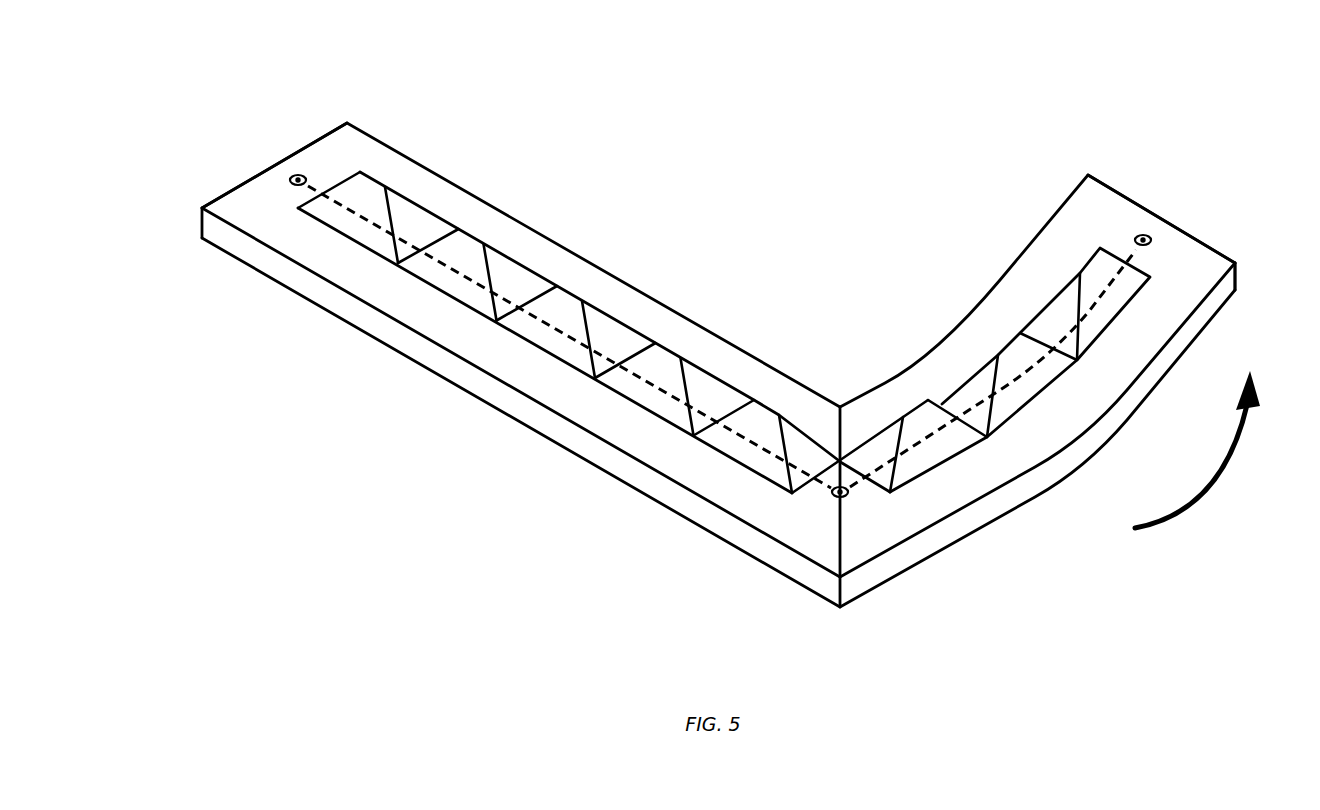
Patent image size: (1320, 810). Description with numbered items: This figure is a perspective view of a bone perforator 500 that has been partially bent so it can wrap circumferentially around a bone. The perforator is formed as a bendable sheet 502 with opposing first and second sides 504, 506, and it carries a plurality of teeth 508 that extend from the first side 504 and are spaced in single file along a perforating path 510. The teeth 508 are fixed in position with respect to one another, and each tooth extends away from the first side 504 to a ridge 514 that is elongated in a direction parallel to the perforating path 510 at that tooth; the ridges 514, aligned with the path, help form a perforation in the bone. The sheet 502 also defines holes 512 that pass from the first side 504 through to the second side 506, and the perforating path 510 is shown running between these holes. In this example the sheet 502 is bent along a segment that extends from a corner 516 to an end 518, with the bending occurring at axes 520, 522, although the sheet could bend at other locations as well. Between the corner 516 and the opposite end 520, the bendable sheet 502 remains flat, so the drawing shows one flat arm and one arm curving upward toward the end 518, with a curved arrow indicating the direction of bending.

The bone perforator 500 is at (972, 145).
The bendable sheet 502 is at (373, 158).
The first side 504 is at (693, 475).
The second side 506 is at (807, 593).
The teeth 508 is at (347, 237).
The perforating path 510 is at (708, 417).
The hole 512 is at (1185, 197).
The ridge 514 is at (566, 288).
The corner 516 is at (841, 582).
The end 518 is at (1207, 238).
The end 520 is at (1085, 503).
The axis 522 is at (1130, 404).